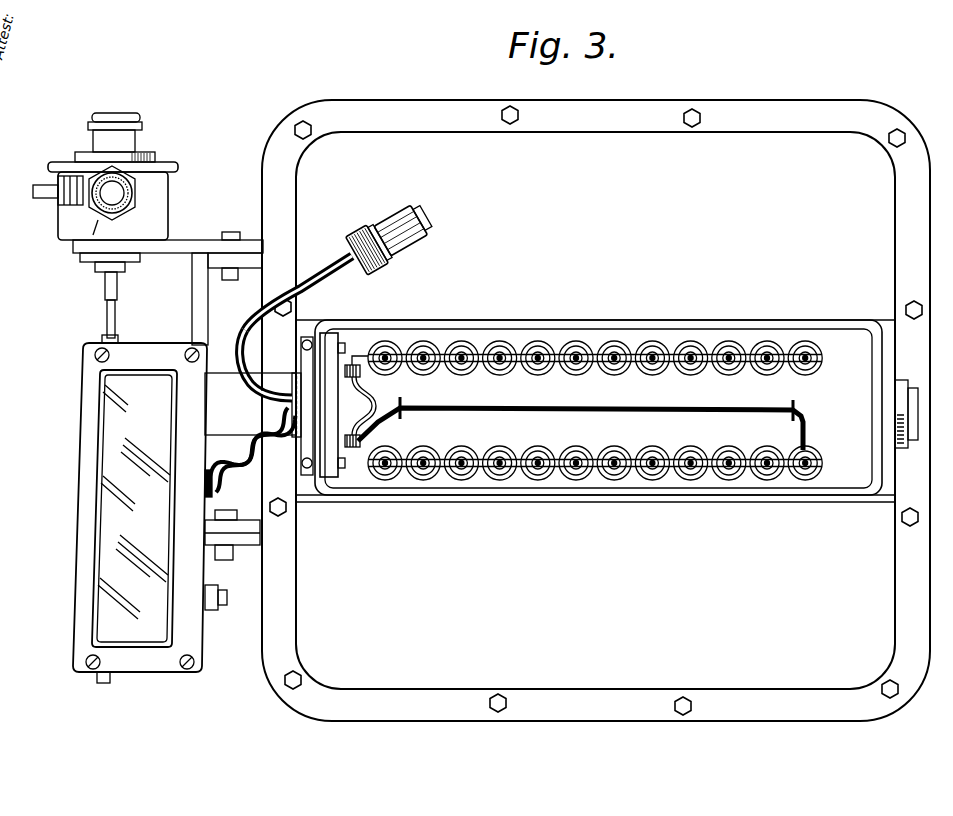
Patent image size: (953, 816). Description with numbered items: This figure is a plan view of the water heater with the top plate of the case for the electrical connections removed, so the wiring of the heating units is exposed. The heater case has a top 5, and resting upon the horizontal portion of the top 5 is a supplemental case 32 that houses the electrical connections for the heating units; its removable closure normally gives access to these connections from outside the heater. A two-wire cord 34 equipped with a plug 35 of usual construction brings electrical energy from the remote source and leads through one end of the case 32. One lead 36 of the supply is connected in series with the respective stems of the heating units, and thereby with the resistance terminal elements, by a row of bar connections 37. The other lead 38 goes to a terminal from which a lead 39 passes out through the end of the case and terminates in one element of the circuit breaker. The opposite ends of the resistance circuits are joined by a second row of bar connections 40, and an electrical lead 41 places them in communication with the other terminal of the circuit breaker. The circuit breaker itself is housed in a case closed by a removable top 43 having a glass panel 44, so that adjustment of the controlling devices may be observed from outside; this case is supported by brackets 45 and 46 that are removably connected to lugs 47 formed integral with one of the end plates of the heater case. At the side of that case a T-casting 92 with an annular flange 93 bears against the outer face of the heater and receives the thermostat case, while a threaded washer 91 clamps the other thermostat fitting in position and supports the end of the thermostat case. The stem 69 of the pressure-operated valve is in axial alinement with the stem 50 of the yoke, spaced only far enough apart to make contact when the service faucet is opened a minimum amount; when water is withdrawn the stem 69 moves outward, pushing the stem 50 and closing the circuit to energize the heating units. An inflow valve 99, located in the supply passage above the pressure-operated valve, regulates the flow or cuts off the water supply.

The top 5 is at (596, 410).
The supplemental case 32 is at (584, 322).
The two-wire cord 34 is at (314, 282).
The plug 35 is at (392, 250).
The lead 36 is at (360, 375).
The bar connections 37 is at (787, 368).
The lead 38 is at (362, 443).
The lead 39 is at (224, 484).
The bar connections 40 is at (408, 452).
The electrical lead 41 is at (525, 411).
The removable top 43 is at (152, 663).
The glass panel 44 is at (134, 508).
The bracket 45 is at (243, 548).
The bracket 46 is at (196, 297).
The lugs 47 is at (246, 270).
The stem 50 is at (108, 313).
The stem 69 is at (106, 286).
The threaded washer 91 is at (902, 380).
The T-casting 92 is at (260, 371).
The annular flange 93 is at (292, 373).
The inflow valve 99 is at (62, 196).